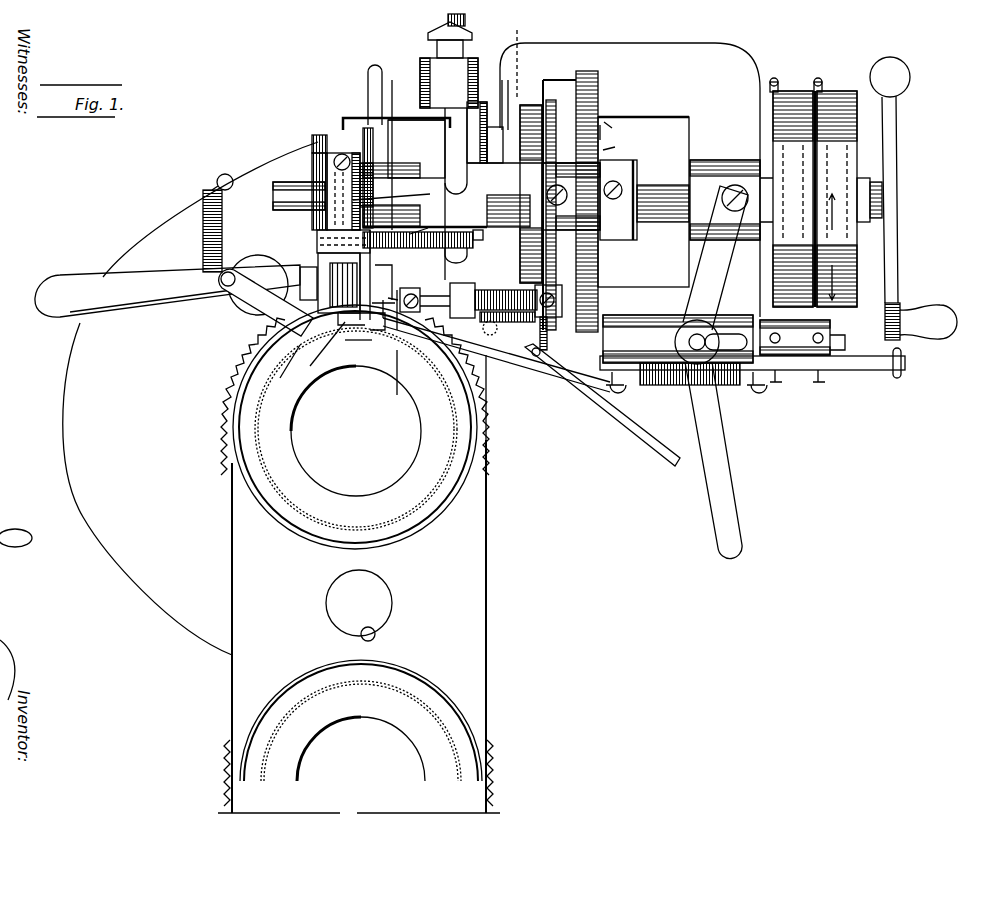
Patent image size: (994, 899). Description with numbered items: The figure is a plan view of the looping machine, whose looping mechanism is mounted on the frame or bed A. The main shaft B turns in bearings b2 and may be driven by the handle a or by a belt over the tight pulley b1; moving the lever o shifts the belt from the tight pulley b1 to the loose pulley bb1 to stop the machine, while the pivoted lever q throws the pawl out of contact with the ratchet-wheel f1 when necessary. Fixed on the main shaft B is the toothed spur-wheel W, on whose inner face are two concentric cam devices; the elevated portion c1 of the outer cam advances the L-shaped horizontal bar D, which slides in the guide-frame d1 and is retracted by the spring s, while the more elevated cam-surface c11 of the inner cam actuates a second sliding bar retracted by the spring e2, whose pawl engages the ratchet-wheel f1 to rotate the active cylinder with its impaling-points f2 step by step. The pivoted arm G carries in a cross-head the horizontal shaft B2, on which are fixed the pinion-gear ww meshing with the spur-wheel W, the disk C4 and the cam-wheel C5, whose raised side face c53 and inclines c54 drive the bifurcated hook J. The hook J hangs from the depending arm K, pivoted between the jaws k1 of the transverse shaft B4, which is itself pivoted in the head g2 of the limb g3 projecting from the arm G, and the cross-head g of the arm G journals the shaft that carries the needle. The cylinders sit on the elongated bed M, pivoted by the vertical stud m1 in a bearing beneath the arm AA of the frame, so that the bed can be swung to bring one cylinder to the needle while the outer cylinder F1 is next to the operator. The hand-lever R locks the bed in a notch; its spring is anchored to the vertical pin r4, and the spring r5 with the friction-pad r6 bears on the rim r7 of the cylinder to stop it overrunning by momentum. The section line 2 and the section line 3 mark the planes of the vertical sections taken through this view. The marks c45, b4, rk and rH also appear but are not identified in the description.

The frame or bed A is at (630, 180).
The cam-surface c11 is at (615, 129).
The pinion-gear ww is at (624, 147).
The toothed spur-wheel W is at (582, 72).
The main shaft B is at (656, 192).
The bearings b2 is at (725, 200).
The loose pulley bb1 is at (786, 192).
The tight pulley b1 is at (848, 192).
The handle a is at (950, 330).
The lever o is at (722, 419).
The pivoted lever q is at (628, 422).
The spring e2 is at (515, 356).
The L-shaped horizontal bar D is at (494, 297).
The guide-frame d1 is at (552, 273).
The spring s is at (397, 291).
The vertical jaws k1 is at (386, 290).
The cross-head g is at (481, 165).
The pivoted arm G is at (452, 150).
The head g2 is at (401, 195).
The limb g3 is at (429, 221).
The disk C4 is at (520, 192).
The sleeve collar c45 is at (513, 98).
The section line 2 2 is at (523, 54).
The elevated portion c1 is at (548, 110).
The set screw b4 is at (556, 185).
The cam-wheel C5 is at (335, 132).
The section line 3 3 is at (398, 237).
The inclines c54 is at (312, 143).
The raised side face c53 is at (312, 166).
The horizontal shaft B2 is at (272, 190).
The horizontal transverse shaft B4 is at (318, 248).
The pawl pivot rk is at (304, 270).
The hand-lever R is at (145, 289).
The friction-pad r6 is at (266, 295).
The spring r5 is at (199, 231).
The vertical pin r4 is at (216, 182).
The arm AA is at (190, 398).
The cylinder F1 is at (357, 543).
The impaling-points f2 is at (294, 736).
The rim r7 is at (246, 369).
The ratchet-wheel f1 is at (489, 776).
The bed or support M is at (359, 556).
The vertical shaft or stud m1 is at (359, 605).
The bifurcated hook J is at (280, 368).
The vertically-depending arm K is at (321, 350).
The pivot rH is at (354, 353).